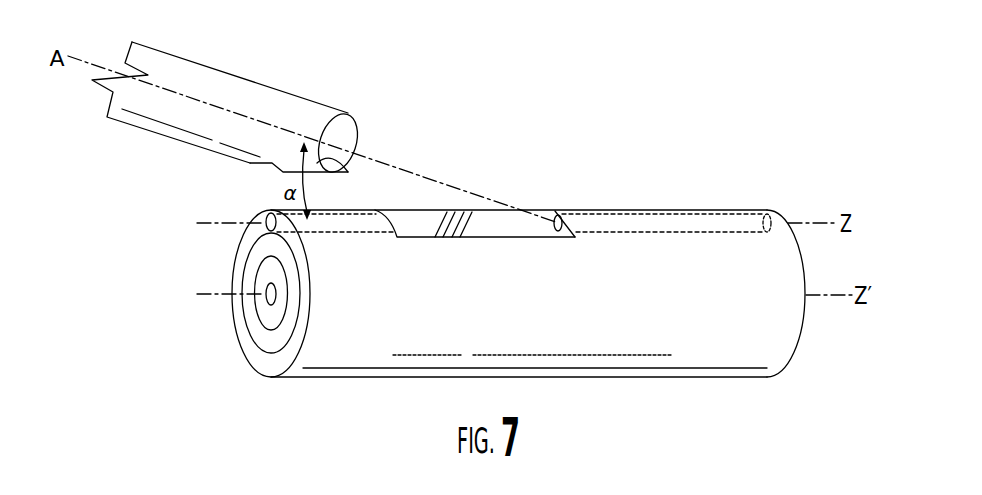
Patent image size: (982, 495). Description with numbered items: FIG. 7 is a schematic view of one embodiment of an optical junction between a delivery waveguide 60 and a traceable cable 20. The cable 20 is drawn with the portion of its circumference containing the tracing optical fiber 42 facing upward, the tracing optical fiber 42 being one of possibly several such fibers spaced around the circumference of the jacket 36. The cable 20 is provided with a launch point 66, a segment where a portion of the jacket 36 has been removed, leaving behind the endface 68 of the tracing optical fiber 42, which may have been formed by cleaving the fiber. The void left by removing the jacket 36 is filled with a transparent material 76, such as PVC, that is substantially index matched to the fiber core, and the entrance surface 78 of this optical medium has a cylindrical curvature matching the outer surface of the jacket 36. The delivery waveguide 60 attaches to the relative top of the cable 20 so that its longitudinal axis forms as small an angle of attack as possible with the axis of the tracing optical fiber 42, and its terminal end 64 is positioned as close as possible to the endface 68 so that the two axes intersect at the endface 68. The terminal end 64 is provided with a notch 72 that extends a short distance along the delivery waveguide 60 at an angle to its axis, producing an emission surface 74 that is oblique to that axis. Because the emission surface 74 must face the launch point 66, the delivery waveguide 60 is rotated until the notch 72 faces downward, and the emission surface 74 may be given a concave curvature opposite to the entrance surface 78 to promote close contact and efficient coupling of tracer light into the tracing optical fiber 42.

The cable 20 is at (678, 378).
The jacket 36 is at (260, 360).
The tracing optical fiber 42 is at (725, 225).
The delivery waveguide 60 is at (200, 63).
The terminal end 64 is at (350, 138).
The launch point 66 is at (528, 194).
The endface 68 is at (557, 217).
The notch 72 is at (349, 183).
The emission surface 74 is at (317, 165).
The transparent material 76 is at (413, 235).
The entrance surface 78 is at (473, 211).